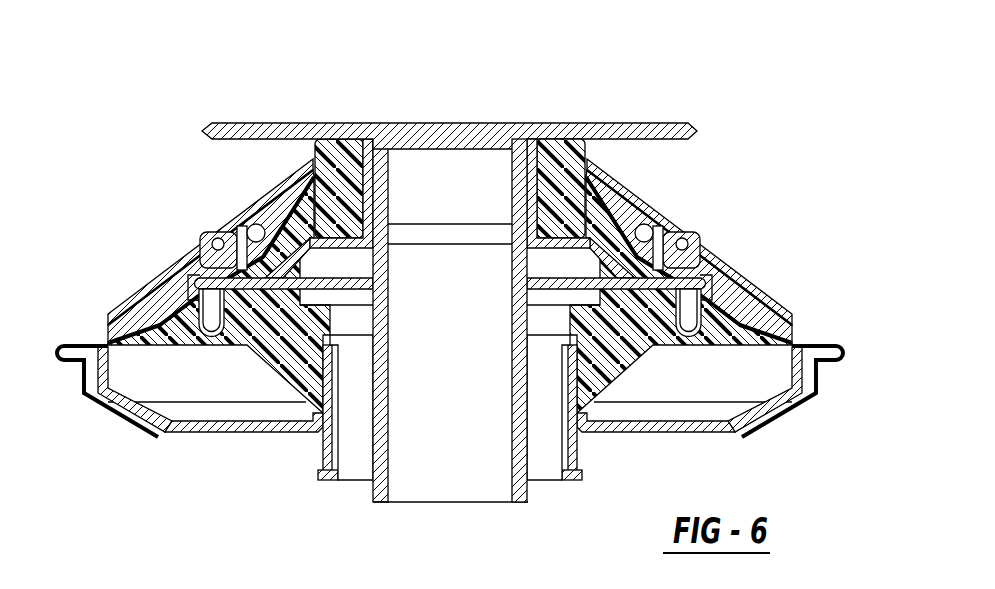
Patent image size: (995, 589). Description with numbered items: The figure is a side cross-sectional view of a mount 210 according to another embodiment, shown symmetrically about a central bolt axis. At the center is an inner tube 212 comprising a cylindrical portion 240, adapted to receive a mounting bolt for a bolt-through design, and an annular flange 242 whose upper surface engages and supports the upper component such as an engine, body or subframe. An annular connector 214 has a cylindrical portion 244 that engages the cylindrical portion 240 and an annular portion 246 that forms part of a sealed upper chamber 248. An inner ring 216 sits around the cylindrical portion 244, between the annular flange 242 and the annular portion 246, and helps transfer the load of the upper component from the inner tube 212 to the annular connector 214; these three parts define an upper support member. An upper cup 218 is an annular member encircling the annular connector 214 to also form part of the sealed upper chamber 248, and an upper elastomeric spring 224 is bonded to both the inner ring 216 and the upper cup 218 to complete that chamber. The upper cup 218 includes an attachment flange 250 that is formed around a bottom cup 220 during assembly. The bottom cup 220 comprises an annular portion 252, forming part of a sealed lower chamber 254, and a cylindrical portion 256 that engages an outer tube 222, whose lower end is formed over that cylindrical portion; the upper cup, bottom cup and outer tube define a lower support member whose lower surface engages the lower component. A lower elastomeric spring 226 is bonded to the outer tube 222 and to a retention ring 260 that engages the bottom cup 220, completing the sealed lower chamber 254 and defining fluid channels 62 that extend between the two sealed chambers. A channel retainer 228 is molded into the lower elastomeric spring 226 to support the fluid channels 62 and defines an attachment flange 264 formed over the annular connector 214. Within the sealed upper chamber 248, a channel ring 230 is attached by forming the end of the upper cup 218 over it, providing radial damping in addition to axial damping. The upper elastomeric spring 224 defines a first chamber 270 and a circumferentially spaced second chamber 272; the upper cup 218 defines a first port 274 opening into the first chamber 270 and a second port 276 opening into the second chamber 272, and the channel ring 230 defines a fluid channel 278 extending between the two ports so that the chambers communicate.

The mount 210 is at (712, 80).
The inner tube 212 is at (382, 502).
The annular connector 214 is at (622, 244).
The inner ring 216 is at (567, 155).
The upper cup 218 is at (793, 328).
The bottom cup 220 is at (760, 417).
The outer tube 222 is at (568, 467).
The upper elastomeric spring 224 is at (302, 180).
The lower elastomeric spring 226 is at (180, 278).
The channel retainer 228 is at (708, 313).
The channel ring 230 is at (700, 248).
The cylindrical portion 240 is at (392, 317).
The annular flange 242 is at (288, 135).
The cylindrical portion 244 is at (365, 200).
The annular portion 246 is at (205, 245).
The sealed upper chamber 248 is at (133, 262).
The attachment flange 250 is at (65, 345).
The annular portion 252 is at (213, 433).
The sealed lower chamber 254 is at (200, 363).
The cylindrical portion 256 is at (313, 450).
The retention ring 260 is at (800, 382).
The attachment flange 264 is at (672, 277).
The first chamber 270 is at (256, 224).
The second chamber 272 is at (654, 228).
The first port 274 is at (233, 236).
The second port 276 is at (717, 273).
The fluid channel 278 is at (207, 238).
The fluid channel 62 is at (690, 300).